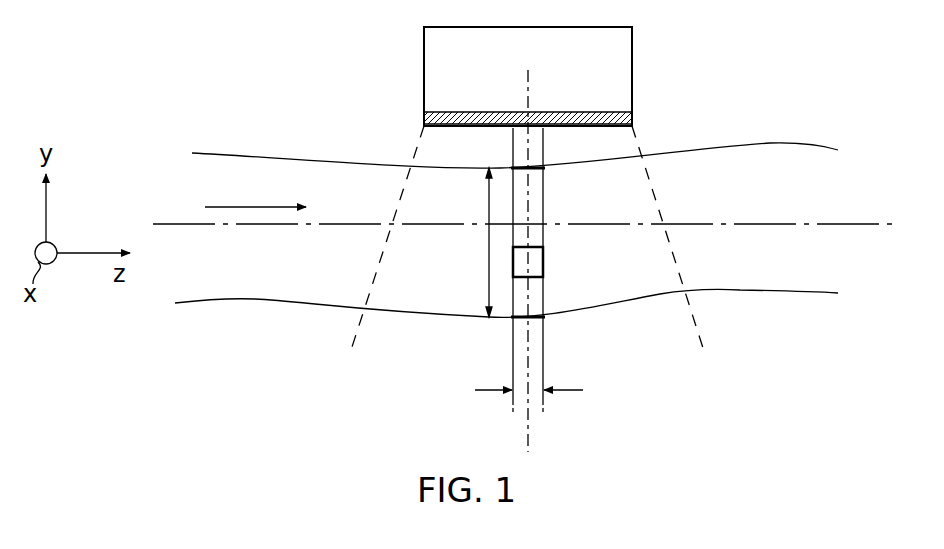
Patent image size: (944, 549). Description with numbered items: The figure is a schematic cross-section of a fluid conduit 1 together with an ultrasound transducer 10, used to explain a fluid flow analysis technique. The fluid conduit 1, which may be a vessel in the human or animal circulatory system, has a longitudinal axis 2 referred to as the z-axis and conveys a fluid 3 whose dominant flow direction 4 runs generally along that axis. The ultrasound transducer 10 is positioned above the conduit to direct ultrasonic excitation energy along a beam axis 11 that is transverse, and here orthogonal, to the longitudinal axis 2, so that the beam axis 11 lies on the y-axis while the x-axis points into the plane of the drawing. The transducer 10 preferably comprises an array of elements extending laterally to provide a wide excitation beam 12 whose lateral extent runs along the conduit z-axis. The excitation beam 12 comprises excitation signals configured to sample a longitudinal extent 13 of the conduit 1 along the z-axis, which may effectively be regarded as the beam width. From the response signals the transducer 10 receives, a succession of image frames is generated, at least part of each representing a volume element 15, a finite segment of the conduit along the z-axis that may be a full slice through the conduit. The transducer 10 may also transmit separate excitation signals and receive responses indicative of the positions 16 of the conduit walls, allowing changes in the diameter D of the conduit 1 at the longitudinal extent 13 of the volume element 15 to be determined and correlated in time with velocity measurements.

The fluid conduit 1 is at (308, 153).
The longitudinal axis 2 is at (857, 224).
The fluid 3 is at (255, 289).
The dominant flow direction 4 is at (237, 206).
The ultrasound transducer 10 is at (424, 70).
The beam axis 11 is at (525, 423).
The excitation beam 12 is at (644, 146).
The longitudinal extent 13 is at (555, 384).
The volume element 15 is at (527, 268).
The conduit wall positions 16 is at (518, 168).
The conduit diameter D is at (487, 248).